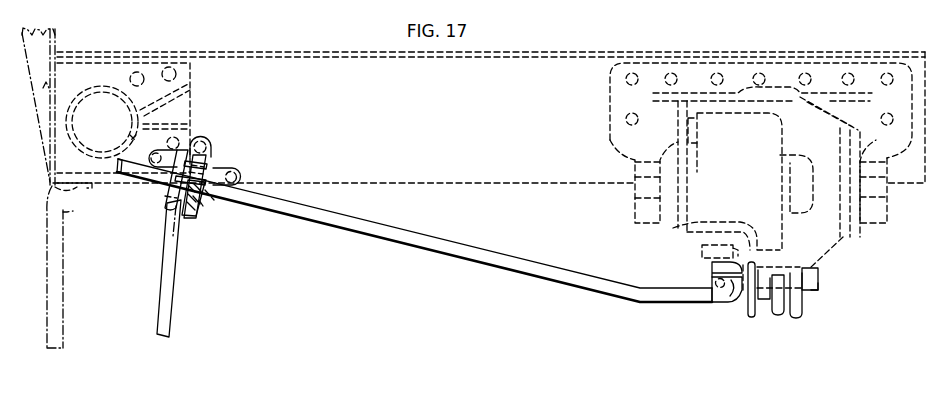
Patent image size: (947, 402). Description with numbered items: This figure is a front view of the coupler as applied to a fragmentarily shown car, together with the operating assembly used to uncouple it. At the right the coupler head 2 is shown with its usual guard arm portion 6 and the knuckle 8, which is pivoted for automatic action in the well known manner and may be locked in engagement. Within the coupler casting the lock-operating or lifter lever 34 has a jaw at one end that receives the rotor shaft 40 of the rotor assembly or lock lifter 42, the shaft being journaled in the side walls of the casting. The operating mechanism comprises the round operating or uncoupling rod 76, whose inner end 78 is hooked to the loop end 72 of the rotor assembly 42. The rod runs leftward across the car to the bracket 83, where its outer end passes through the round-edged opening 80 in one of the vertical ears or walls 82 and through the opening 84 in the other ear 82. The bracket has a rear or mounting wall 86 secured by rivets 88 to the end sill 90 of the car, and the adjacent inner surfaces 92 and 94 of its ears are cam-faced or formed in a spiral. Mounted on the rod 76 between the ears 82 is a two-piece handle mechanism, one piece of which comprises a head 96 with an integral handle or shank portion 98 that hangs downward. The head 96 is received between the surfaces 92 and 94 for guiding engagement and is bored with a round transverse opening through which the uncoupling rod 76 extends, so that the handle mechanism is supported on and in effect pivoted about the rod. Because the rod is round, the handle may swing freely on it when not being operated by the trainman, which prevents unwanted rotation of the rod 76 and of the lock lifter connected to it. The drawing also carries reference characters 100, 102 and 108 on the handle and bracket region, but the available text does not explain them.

The coupler head 2 is at (673, 223).
The guard arm portion 6 is at (802, 177).
The knuckle 8 is at (735, 181).
The lock-operating or lifter lever 34 is at (779, 318).
The rotor shaft 40 is at (811, 276).
The rotor assembly or lock lifter 42 is at (817, 291).
The loop end 72 is at (726, 297).
The operating or uncoupling rod 76 is at (407, 233).
The inner end 78 is at (714, 267).
The round-edged opening 80 is at (231, 170).
The vertical ears or walls 82 is at (207, 157).
The bracket 83 is at (243, 176).
The opening 84 is at (166, 195).
The rear or mounting wall 86 is at (190, 151).
The rivets 88 is at (140, 141).
The end sill 90 is at (491, 117).
The inner surface 92 is at (196, 226).
The inner surface 94 is at (181, 214).
The head 96 is at (217, 155).
The handle or shank portion 98 is at (181, 266).
The bar end 100 is at (136, 185).
The bar slot 102 is at (218, 200).
The upper bolt 108 is at (190, 234).